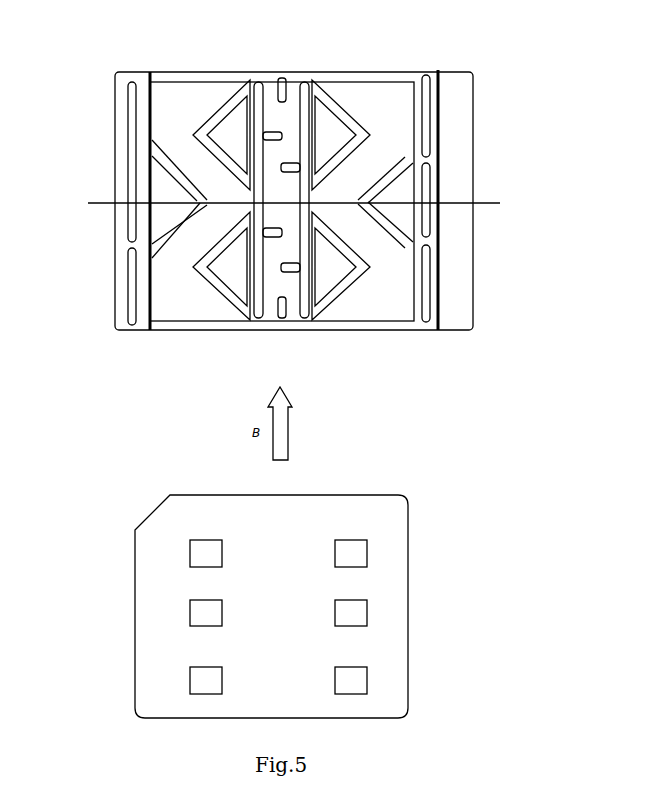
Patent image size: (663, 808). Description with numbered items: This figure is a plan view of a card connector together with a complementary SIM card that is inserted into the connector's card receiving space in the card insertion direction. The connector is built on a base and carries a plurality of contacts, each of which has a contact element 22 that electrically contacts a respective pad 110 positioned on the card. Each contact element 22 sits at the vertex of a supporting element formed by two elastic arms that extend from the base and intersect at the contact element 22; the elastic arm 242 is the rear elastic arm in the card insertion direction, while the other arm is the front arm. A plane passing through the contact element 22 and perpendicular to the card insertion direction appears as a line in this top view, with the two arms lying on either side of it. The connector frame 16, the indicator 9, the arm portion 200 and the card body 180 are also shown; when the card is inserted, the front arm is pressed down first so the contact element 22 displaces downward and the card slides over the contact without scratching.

The housing 16 is at (287, 181).
The contact element 22 is at (234, 199).
The elastic arm 242 is at (190, 197).
The lower contact arm 200 is at (203, 213).
The section line 9 is at (103, 203).
The pad 110 is at (350, 560).
The circuit board 180 is at (378, 643).